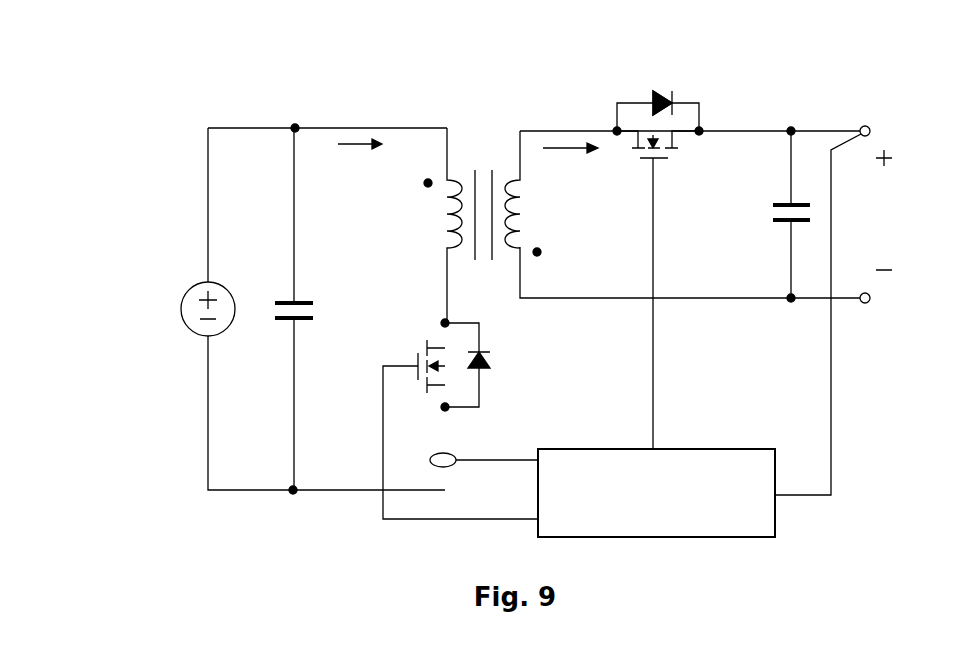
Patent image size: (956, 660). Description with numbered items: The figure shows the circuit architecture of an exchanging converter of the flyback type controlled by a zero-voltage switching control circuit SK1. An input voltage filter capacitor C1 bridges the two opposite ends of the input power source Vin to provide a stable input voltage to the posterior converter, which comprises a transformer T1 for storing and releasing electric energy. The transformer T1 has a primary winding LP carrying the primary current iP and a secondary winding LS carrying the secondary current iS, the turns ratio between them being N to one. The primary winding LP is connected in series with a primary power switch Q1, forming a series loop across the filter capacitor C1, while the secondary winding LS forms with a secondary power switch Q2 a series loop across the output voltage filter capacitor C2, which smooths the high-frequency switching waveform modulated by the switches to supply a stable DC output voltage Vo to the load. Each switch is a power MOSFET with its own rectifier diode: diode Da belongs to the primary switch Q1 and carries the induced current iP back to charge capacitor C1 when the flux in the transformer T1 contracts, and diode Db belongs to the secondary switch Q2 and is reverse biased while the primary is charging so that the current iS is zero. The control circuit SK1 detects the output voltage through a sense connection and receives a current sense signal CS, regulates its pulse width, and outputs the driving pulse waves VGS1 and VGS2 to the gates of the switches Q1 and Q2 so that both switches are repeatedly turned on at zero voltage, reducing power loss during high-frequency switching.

The input power source Vin is at (176, 309).
The input voltage filter capacitor C1 is at (314, 315).
The primary winding current iP is at (360, 159).
The transformer T1 is at (484, 179).
The primary winding LP is at (424, 225).
The secondary winding LS is at (539, 193).
The secondary winding current iS is at (570, 164).
The rectifier diode of secondary power switch Db is at (658, 96).
The secondary power switch Q2 is at (660, 290).
The output voltage filter capacitor C2 is at (769, 215).
The DC output voltage Vo is at (833, 310).
The diode of primary power switch Da is at (485, 365).
The primary power switch Q1 is at (457, 426).
The current sense CS is at (484, 450).
The driving voltage pulse wave VGS1 is at (504, 507).
The output pulse wave VGS2 is at (678, 435).
The zero-voltage switching control circuit SK1 is at (656, 519).